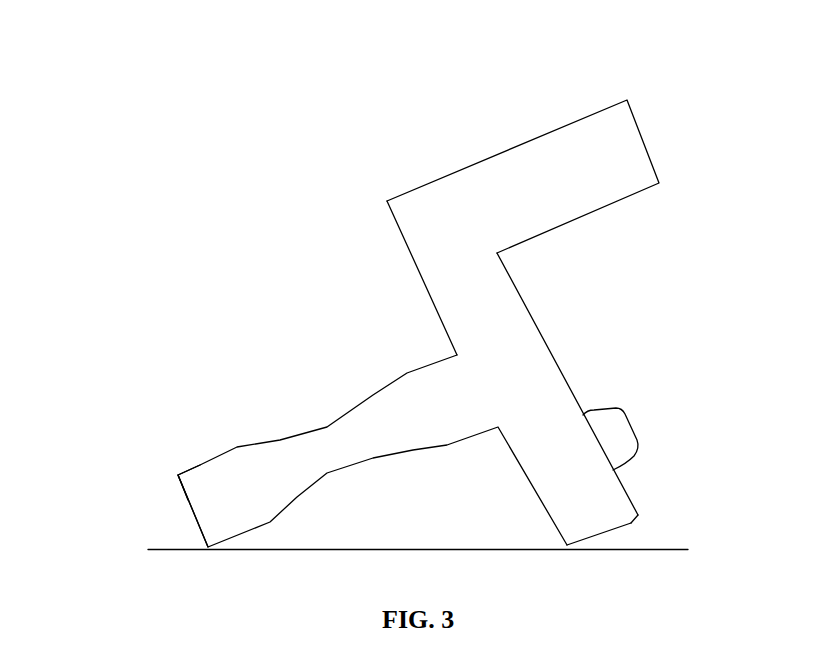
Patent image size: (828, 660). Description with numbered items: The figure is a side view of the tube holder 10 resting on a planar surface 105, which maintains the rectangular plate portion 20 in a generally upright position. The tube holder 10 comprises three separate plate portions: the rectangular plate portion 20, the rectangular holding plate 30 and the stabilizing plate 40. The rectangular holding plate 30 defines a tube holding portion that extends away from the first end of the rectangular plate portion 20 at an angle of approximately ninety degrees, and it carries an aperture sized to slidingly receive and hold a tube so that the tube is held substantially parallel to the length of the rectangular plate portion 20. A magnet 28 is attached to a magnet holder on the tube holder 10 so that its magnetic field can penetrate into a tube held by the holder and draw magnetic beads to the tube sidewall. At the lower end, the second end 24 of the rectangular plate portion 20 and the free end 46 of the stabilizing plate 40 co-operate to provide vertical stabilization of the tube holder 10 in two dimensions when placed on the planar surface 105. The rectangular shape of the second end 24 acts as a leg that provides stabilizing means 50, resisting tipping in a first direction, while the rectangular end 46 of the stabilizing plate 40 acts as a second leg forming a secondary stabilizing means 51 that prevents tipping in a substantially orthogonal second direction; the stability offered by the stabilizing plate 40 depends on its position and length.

The tube holder 10 is at (226, 208).
The rectangular plate portion 20 is at (483, 287).
The rectangular holding plate 30 is at (595, 142).
The magnet 28 is at (610, 423).
The stabilizing means 50 is at (643, 517).
The second end 24 is at (631, 523).
The stabilizing plate 40 is at (216, 487).
The secondary stabilizing means 51 is at (175, 477).
The free end 46 is at (192, 512).
The planar surface 105 is at (672, 552).